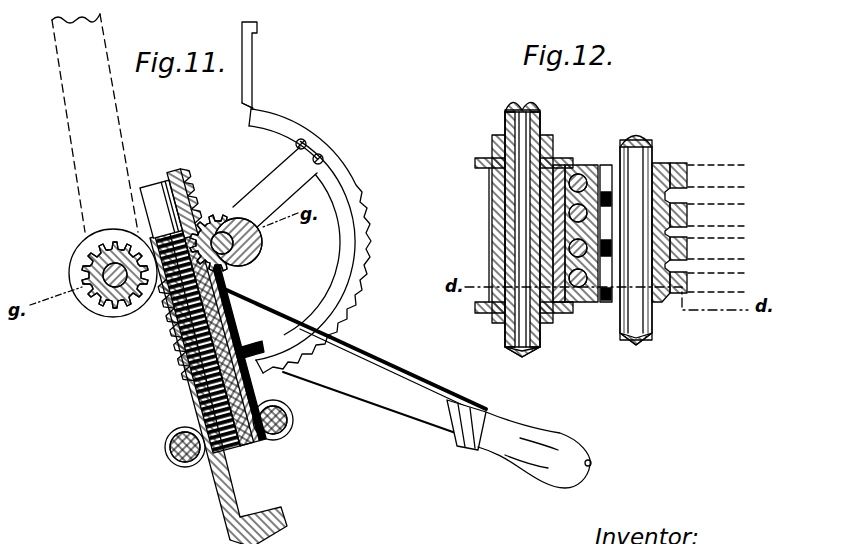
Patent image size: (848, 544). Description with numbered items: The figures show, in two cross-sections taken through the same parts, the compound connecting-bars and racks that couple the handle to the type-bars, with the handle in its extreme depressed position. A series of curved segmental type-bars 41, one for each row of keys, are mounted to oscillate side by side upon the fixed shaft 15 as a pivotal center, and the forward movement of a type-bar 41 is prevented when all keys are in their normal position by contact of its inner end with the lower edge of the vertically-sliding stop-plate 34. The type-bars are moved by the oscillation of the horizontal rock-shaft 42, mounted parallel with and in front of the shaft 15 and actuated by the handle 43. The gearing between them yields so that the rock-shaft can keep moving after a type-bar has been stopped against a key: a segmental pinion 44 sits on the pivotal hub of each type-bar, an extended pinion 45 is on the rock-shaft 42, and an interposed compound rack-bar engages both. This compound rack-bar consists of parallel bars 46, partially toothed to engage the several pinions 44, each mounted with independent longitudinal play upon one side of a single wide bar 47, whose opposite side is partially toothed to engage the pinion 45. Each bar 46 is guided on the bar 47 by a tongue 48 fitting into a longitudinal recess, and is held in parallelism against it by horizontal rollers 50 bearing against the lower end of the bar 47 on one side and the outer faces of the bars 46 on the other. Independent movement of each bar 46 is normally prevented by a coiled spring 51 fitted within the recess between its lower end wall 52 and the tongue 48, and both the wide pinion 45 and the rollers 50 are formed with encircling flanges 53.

In FIG. 11, the fixed shaft 15 is at (246, 241).
In FIG. 12, the fixed shaft 15 is at (637, 147).
In FIG. 11, the vertically-sliding stop-plate 34 is at (250, 90).
In FIG. 11, the segmental type-bar 41 is at (335, 287).
In FIG. 12, the segmental type-bar 41 is at (688, 181).
In FIG. 11, the rock-shaft 42 is at (92, 264).
In FIG. 12, the rock-shaft 42 is at (520, 107).
In FIG. 11, the handle 43 is at (437, 408).
In FIG. 11, the segmental pinion 44 is at (212, 218).
In FIG. 12, the segmental pinion 44 is at (660, 168).
In FIG. 11, the extended pinion 45 is at (120, 304).
In FIG. 12, the extended pinion 45 is at (492, 208).
In FIG. 11, the rack-bar 46 is at (185, 193).
In FIG. 12, the rack-bar 46 is at (593, 167).
In FIG. 11, the wide bar 47 is at (180, 377).
In FIG. 12, the wide bar 47 is at (565, 164).
In FIG. 12, the tongue 48 is at (577, 303).
In FIG. 11, the horizontal roller 50 is at (170, 447).
In FIG. 11, the coiled spring 51 is at (223, 320).
In FIG. 11, the lower end wall 52 is at (226, 447).
In FIG. 11, the encircling flange 53 is at (122, 240).
In FIG. 12, the encircling flange 53 is at (483, 157).